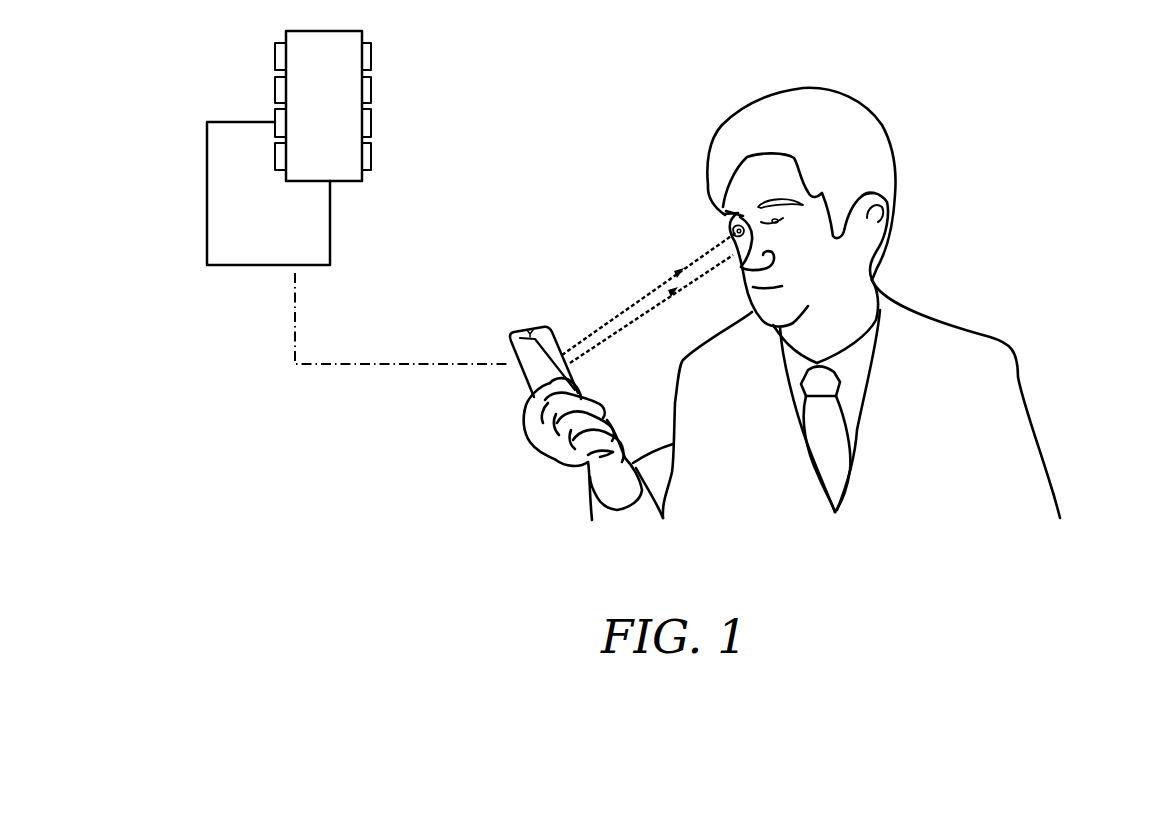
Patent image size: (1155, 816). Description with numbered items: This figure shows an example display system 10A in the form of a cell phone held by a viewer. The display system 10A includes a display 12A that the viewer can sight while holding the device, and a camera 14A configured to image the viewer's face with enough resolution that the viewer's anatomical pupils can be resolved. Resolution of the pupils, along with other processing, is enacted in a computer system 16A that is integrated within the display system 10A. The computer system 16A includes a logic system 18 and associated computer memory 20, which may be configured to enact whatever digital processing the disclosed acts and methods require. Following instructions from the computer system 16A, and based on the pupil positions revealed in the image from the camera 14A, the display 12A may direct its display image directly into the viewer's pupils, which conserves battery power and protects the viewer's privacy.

The display system 10A is at (532, 367).
The display 12A is at (570, 365).
The camera 14A is at (533, 328).
The computer system 16A is at (435, 167).
The logic system 18 is at (280, 206).
The computer memory 20 is at (334, 120).